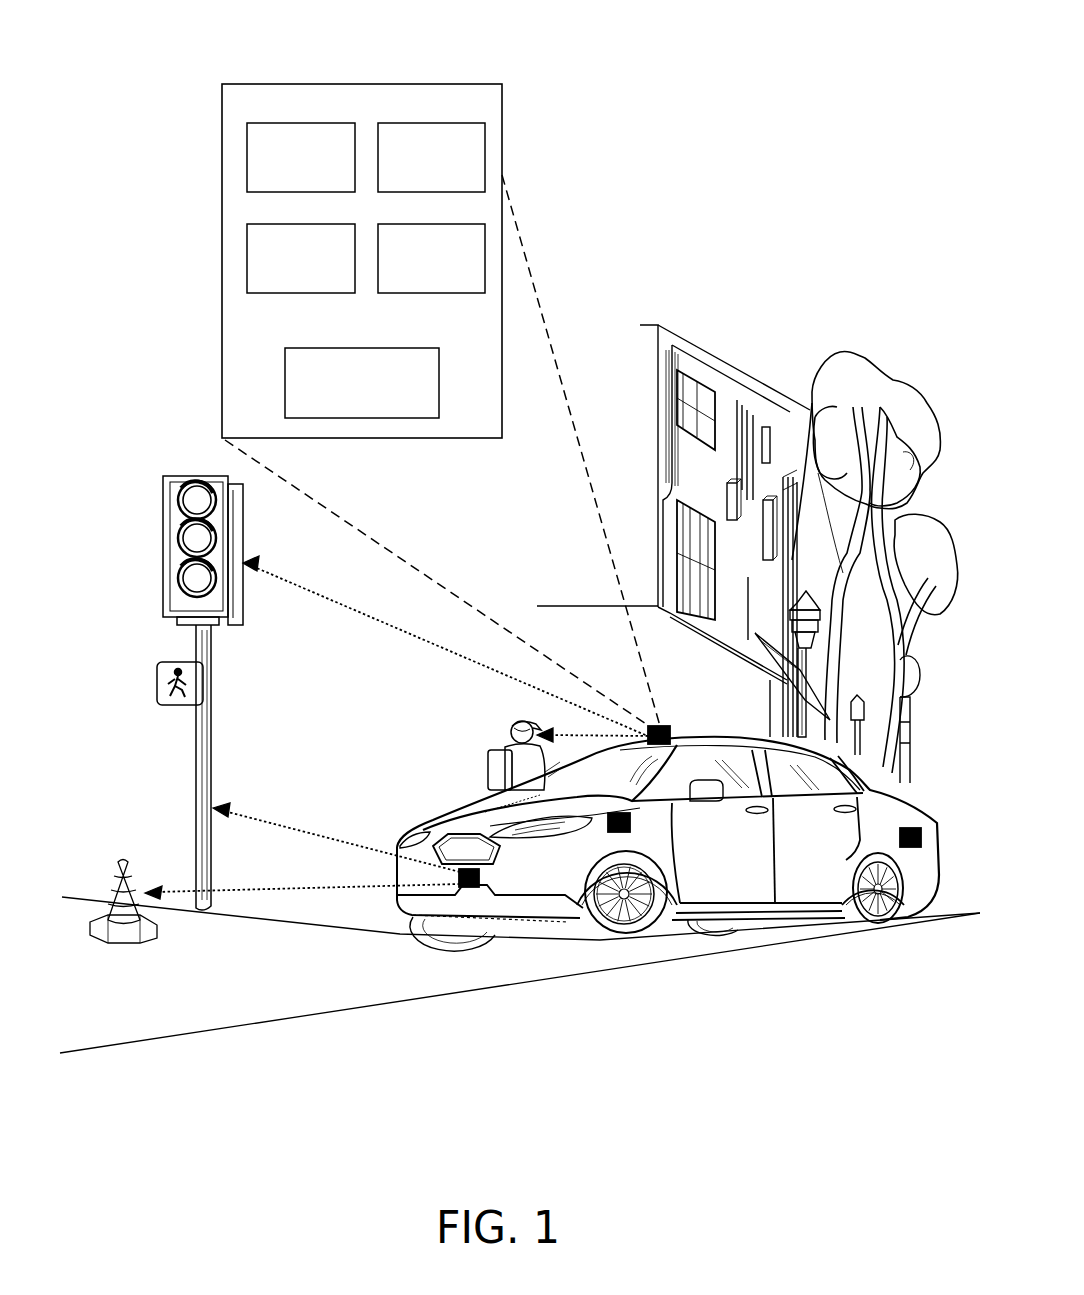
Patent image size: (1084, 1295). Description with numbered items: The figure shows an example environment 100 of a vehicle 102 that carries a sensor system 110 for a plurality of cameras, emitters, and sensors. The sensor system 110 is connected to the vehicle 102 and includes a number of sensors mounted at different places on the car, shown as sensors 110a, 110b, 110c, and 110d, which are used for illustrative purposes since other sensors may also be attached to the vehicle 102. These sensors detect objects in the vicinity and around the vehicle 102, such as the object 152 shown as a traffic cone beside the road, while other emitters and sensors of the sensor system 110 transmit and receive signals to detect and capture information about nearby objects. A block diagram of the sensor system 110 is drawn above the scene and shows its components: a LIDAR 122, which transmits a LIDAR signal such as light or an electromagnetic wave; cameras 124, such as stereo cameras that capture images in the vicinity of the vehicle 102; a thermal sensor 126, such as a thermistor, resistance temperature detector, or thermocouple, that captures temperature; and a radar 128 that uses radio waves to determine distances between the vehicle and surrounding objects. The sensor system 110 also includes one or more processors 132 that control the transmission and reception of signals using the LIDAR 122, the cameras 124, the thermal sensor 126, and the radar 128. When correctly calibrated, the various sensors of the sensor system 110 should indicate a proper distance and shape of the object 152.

The environment 100 is at (852, 33).
The vehicle 102 is at (433, 822).
The sensor system 110 is at (370, 84).
The sensor 110a is at (672, 725).
The sensor 110b is at (620, 812).
The sensor 110c is at (481, 883).
The sensor 110d is at (921, 827).
The LIDAR 122 is at (437, 223).
The cameras 124 is at (283, 223).
The thermal sensor 126 is at (283, 122).
The radar 128 is at (413, 122).
The processors 132 is at (376, 347).
The object 152 is at (130, 940).